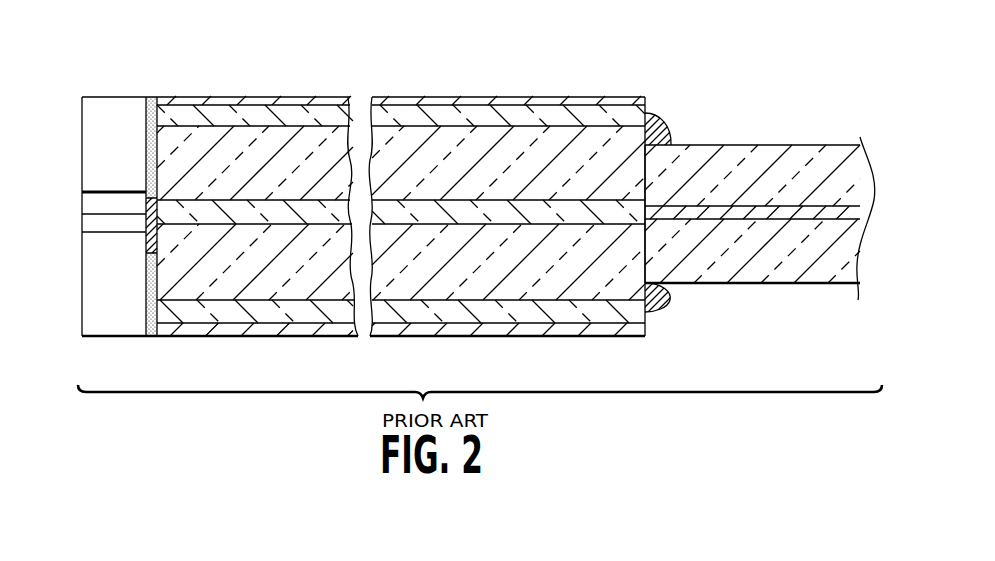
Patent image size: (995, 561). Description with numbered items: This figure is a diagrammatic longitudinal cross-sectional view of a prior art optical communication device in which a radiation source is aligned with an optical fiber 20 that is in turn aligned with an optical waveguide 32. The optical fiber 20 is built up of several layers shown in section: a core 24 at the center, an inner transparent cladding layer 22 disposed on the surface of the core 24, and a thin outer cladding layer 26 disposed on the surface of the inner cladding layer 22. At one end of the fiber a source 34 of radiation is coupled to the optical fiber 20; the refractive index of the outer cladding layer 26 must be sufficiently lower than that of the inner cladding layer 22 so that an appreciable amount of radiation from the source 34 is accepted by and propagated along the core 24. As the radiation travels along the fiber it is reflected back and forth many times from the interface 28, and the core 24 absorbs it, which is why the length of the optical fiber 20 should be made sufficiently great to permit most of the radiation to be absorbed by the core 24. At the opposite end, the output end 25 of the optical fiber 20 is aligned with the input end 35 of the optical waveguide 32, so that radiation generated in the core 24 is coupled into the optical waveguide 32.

The optical fiber 20 is at (447, 88).
The inner transparent cladding layer 22 is at (552, 290).
The core 24 is at (464, 200).
The output end 25 is at (650, 175).
The outer cladding layer 26 is at (310, 313).
The interface 28 is at (212, 298).
The optical waveguide 32 is at (794, 126).
The source 34 is at (82, 253).
The input end 35 is at (645, 165).